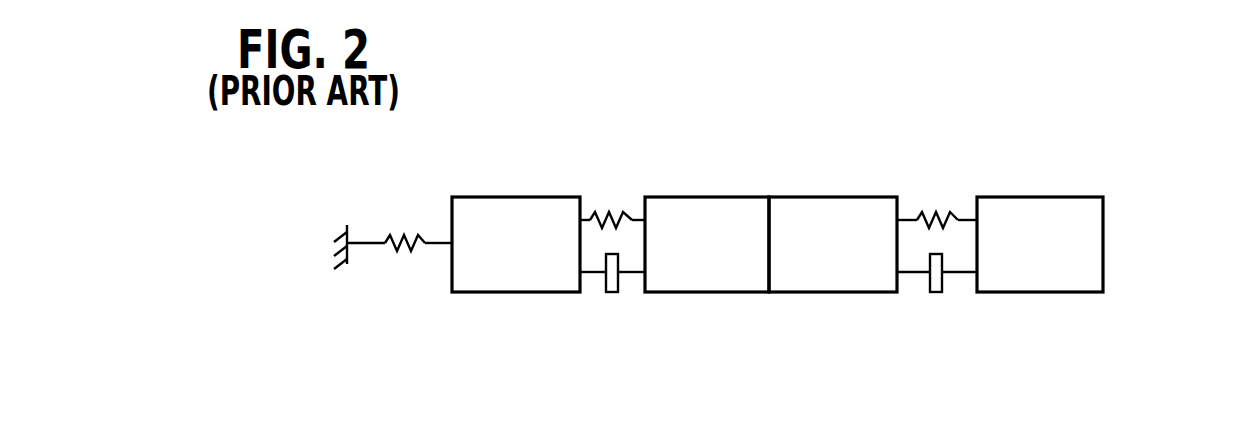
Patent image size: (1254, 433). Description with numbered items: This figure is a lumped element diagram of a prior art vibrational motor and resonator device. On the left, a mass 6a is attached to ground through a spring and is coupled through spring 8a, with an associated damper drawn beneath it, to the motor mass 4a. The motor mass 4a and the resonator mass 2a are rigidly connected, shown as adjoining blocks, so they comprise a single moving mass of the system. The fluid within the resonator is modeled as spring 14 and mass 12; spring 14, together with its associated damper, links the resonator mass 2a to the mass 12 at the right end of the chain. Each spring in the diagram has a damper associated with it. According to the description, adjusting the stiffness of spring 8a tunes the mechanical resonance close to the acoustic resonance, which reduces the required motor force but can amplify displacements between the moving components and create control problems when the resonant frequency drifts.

The resonator mass 2a is at (832, 197).
The motor mass 4a is at (697, 293).
The differential 6a is at (470, 293).
The spring 8a is at (600, 210).
The mass 12 is at (1055, 197).
The spring 14 is at (917, 210).